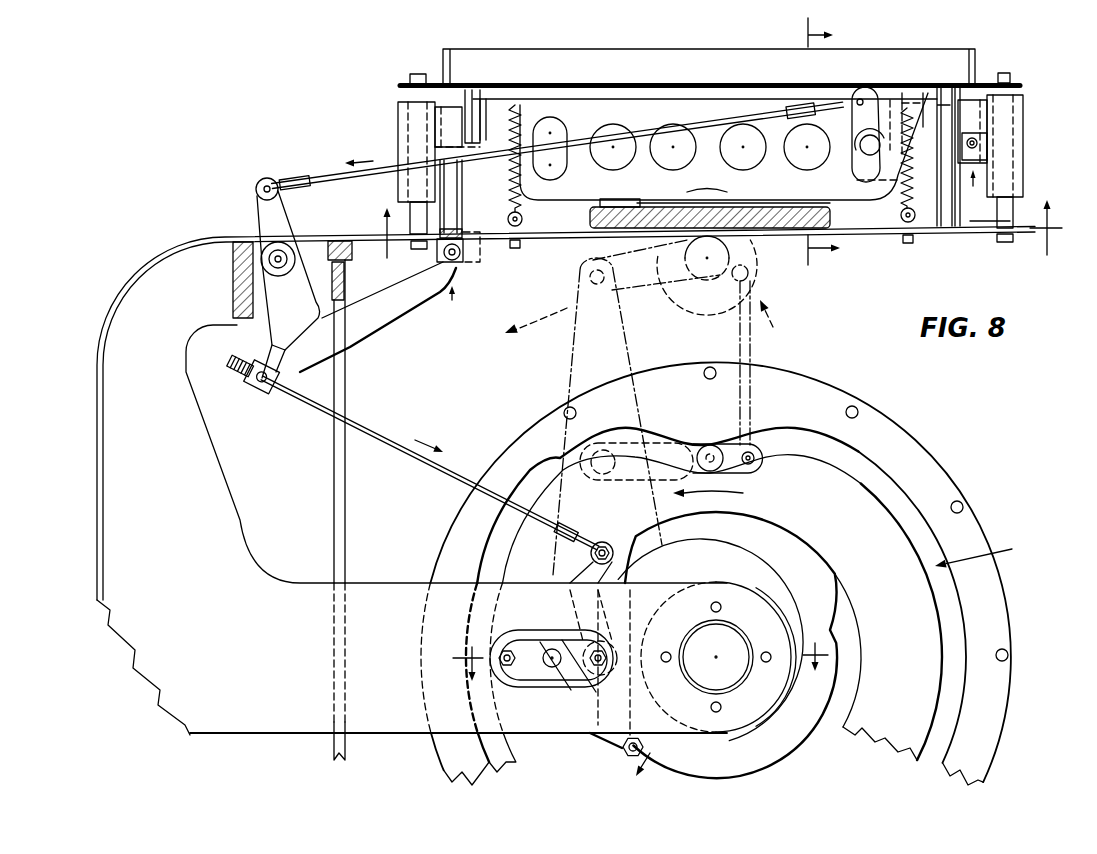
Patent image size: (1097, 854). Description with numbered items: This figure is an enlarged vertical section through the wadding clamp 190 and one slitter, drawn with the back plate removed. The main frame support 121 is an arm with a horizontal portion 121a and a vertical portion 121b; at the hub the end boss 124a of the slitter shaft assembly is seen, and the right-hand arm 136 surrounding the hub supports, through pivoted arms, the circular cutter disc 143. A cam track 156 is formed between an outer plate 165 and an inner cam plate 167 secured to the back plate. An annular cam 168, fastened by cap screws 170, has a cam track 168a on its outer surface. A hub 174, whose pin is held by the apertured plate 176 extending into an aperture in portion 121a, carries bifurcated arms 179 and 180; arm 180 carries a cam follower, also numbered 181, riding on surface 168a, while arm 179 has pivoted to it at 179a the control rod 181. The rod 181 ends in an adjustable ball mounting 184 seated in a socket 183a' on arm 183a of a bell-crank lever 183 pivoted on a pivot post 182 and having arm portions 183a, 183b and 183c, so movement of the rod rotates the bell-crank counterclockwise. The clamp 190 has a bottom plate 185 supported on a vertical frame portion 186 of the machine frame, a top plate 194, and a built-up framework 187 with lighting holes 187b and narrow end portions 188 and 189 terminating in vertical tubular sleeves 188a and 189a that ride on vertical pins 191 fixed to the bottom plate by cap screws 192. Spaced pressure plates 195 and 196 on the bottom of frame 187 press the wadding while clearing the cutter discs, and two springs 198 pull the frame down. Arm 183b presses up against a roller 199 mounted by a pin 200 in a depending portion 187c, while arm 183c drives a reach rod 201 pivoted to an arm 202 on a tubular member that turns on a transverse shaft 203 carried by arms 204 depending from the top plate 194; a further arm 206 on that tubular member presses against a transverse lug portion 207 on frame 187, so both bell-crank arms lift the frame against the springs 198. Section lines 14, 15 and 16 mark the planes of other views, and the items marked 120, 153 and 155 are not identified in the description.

The section line 14 is at (639, 660).
The section line 15 is at (718, 231).
The section line 16 is at (811, 141).
The drive arm 120 is at (772, 303).
The main frame support 121 is at (256, 574).
The horizontal portion 121a is at (392, 567).
The vertical portion 121b is at (117, 372).
The end boss 124a is at (713, 677).
The right-hand arm 136 is at (580, 365).
The circular cutter disc 143 is at (689, 300).
The connecting link 153 is at (746, 355).
The lever link 155 is at (720, 422).
The cam track 156 is at (755, 612).
The outer plate 165 is at (990, 592).
The inner cam plate 167 is at (877, 729).
The cam 168 is at (750, 564).
The cam track 168a is at (800, 590).
The cap screws 170 is at (699, 565).
The hub 174 is at (549, 675).
The apertured plate 176 is at (528, 645).
The bifurcated arm 179 is at (582, 570).
The pivot 179a is at (609, 546).
The bifurcated arm 180 is at (595, 756).
The control rod 181 is at (430, 462).
The pivot post 182 is at (268, 268).
The bell-crank lever 183 is at (281, 224).
The bell-crank arm portion 183a is at (253, 355).
The socket 183a' is at (236, 405).
The bell-crank arm portion 183b is at (383, 315).
The bell-crank arm portion 183c is at (264, 204).
The adjustable ball mounting 184 is at (252, 377).
The bottom plate 185 is at (873, 234).
The vertical frame portion 186 is at (336, 483).
The framework 187 is at (707, 180).
The lighting holes 187b is at (815, 163).
The depending portion 187c is at (468, 240).
The narrow end portion 188 is at (971, 113).
The vertical tubular sleeve portion 188a is at (1022, 150).
The narrow end portion 189 is at (444, 110).
The vertical tubular sleeve 189a is at (406, 128).
The wadding clamp 190 is at (438, 66).
The vertical pins 191 is at (417, 220).
The cap screws 192 is at (1006, 240).
The top plate 194 is at (594, 217).
The pressure plate 195 is at (943, 232).
The pressure plate 196 is at (638, 205).
The springs 198 is at (509, 188).
The roller 199 is at (440, 265).
The pin 200 is at (456, 266).
The reach rod 201 is at (628, 134).
The arm 202 is at (856, 122).
The transverse shaft 203 is at (872, 136).
The arms 204 is at (921, 93).
The arm 206 is at (884, 160).
The transverse lug portion 207 is at (978, 142).